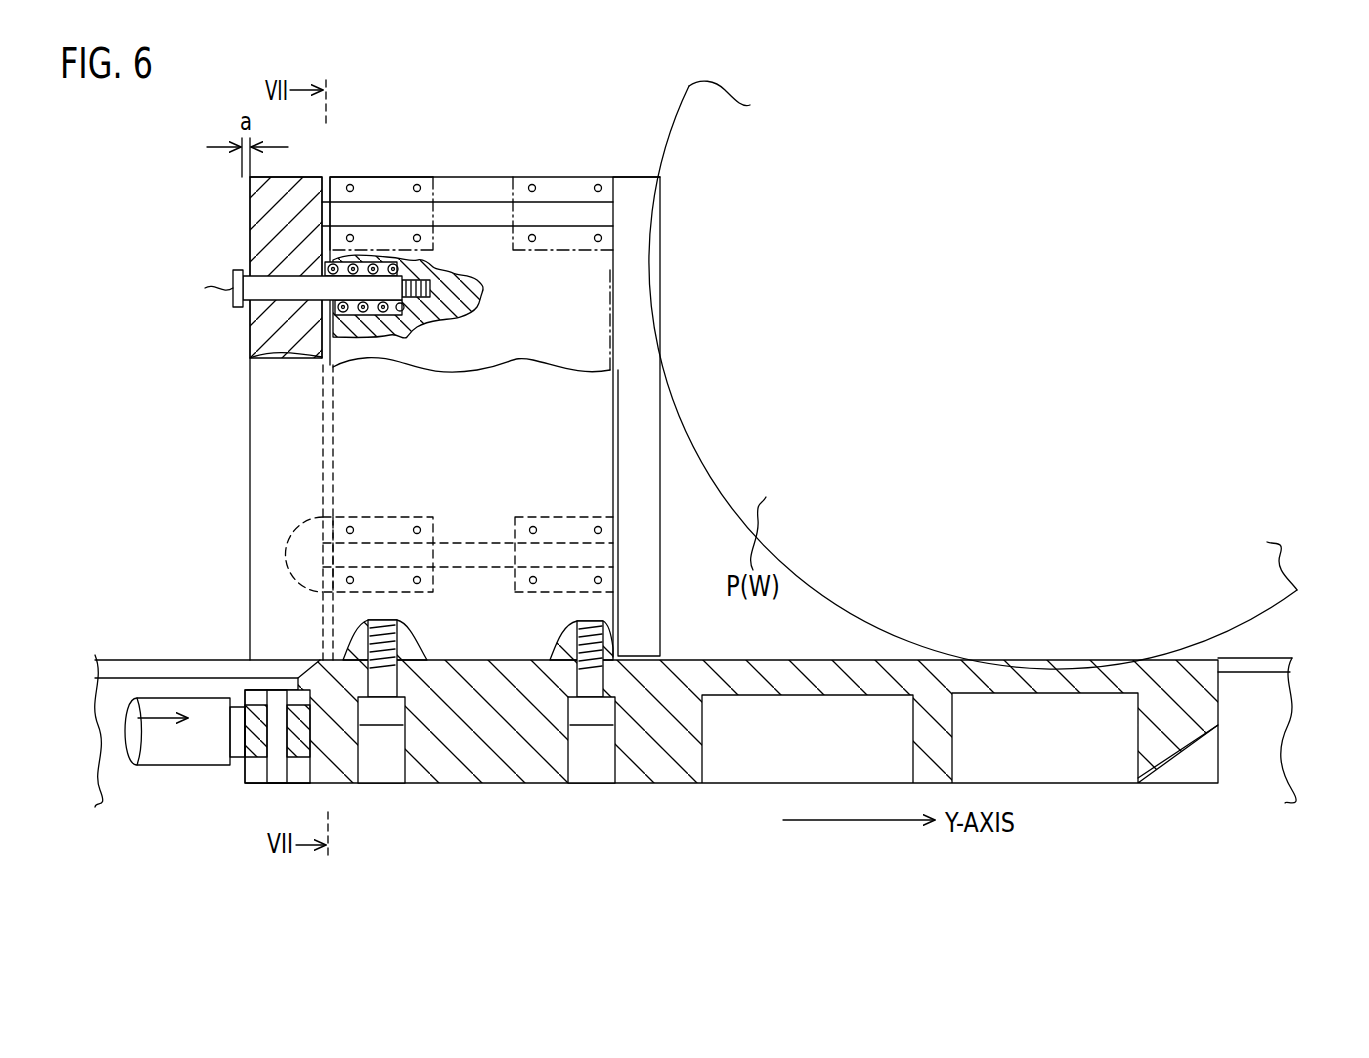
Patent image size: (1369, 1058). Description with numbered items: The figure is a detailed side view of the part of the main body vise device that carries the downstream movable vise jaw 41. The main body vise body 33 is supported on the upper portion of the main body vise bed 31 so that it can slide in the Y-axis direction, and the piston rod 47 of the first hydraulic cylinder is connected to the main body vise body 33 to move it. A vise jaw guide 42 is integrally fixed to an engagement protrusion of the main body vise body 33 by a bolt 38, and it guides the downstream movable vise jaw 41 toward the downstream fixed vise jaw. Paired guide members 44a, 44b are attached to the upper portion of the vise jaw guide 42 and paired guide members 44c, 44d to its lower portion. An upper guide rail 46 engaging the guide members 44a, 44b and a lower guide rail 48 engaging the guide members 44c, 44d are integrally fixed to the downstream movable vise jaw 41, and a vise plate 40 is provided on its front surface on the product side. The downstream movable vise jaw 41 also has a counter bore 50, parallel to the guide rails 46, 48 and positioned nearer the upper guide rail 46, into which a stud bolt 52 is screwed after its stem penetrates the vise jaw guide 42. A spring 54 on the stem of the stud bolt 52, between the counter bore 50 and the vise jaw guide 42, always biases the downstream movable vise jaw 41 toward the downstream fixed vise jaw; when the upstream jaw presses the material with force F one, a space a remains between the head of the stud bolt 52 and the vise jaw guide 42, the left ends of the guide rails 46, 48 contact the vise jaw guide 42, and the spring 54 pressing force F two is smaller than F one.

The main body vise bed 31 is at (1278, 742).
The main body vise body 33 is at (510, 772).
The bolt 38 is at (388, 713).
The vise plate 40 is at (637, 390).
The downstream movable vise jaw 41 is at (577, 300).
The vise jaw guide 42 is at (250, 490).
The guide member 44a is at (380, 185).
The guide member 44b is at (566, 185).
The guide member 44c is at (381, 525).
The guide member 44d is at (567, 527).
The upper guide rail 46 is at (468, 210).
The piston rod 47 is at (157, 705).
The lower guide rail 48 is at (470, 552).
The counter bore 50 is at (358, 302).
The stud bolt 52 is at (233, 288).
The spring 54 is at (397, 313).